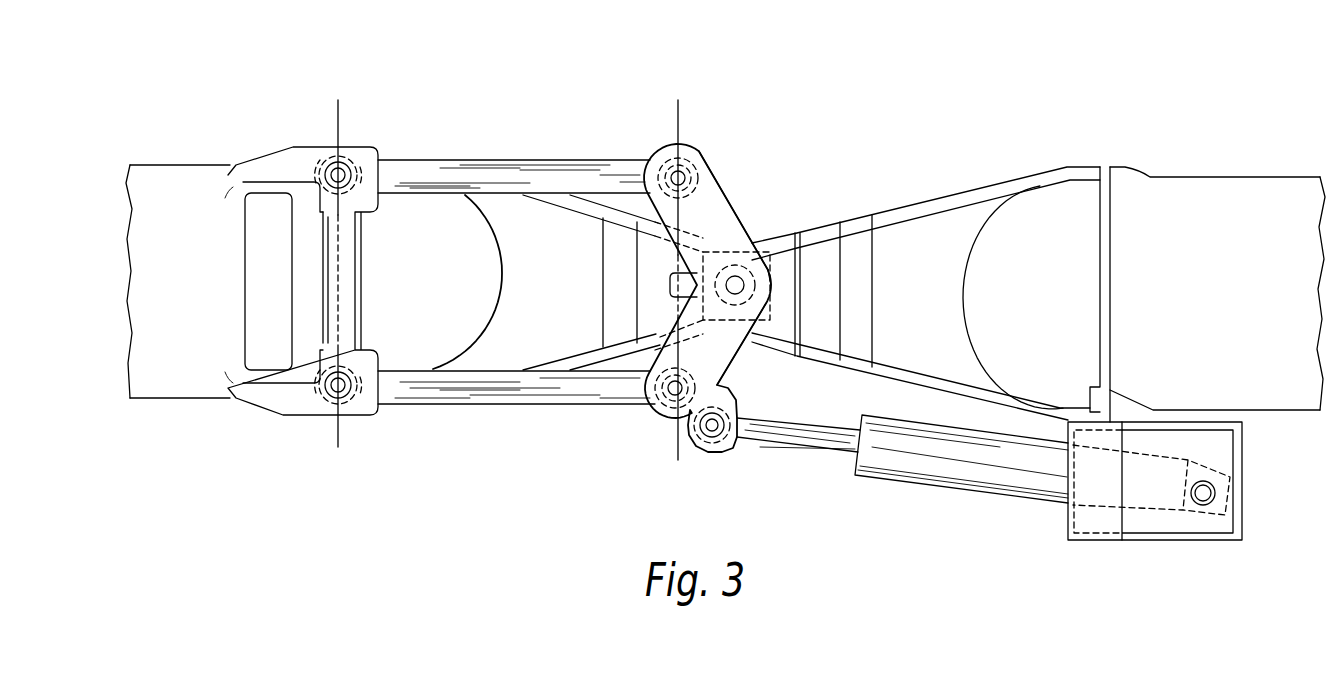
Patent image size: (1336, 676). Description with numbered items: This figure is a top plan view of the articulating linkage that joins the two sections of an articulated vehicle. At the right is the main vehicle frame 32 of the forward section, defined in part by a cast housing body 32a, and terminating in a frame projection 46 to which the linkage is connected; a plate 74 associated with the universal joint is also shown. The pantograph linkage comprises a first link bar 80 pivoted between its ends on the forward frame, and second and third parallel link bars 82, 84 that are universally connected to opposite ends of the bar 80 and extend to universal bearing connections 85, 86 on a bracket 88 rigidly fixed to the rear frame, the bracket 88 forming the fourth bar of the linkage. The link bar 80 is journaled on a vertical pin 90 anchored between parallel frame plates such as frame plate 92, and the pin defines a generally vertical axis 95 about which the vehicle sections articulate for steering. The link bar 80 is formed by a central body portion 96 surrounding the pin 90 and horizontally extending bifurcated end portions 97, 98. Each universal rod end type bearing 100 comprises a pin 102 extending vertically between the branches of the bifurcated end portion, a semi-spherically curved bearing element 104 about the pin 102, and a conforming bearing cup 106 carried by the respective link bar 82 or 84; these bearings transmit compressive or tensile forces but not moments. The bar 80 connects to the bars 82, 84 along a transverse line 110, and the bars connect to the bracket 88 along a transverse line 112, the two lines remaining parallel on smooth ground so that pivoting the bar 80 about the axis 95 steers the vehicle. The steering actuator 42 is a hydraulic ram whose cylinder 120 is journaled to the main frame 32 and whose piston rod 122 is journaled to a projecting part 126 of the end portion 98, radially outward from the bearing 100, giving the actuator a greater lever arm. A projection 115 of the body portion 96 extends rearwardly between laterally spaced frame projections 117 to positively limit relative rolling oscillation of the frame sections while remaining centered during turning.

The main vehicle frame 32 is at (1241, 179).
The cast housing body 32a is at (1160, 177).
The steering actuator 42 is at (928, 478).
The frame projection 46 is at (845, 218).
The plate 74 is at (680, 312).
The first link bar 80 is at (745, 215).
The second link bar 82 is at (457, 160).
The third link bar 84 is at (457, 404).
The universal bearing connection 85 is at (353, 157).
The universal bearing connection 86 is at (325, 402).
The bracket 88 is at (274, 301).
The vertical pin 90 is at (745, 284).
The frame plate 92 is at (776, 330).
The vertical axis 95 is at (755, 289).
The central body portion 96 is at (755, 276).
The bifurcated end portion 97 is at (713, 180).
The bifurcated end portion 98 is at (725, 368).
The universal rod end type bearing 100 is at (666, 160).
The pin 102 is at (690, 160).
The bearing element 104 is at (646, 170).
The bearing cup 106 is at (684, 198).
The line 110 is at (680, 100).
The line 112 is at (343, 430).
The projection 115 is at (668, 282).
The frame projections 117 is at (618, 228).
The cylinder 120 is at (1022, 490).
The piston rod 122 is at (796, 443).
The projecting part 126 is at (732, 440).